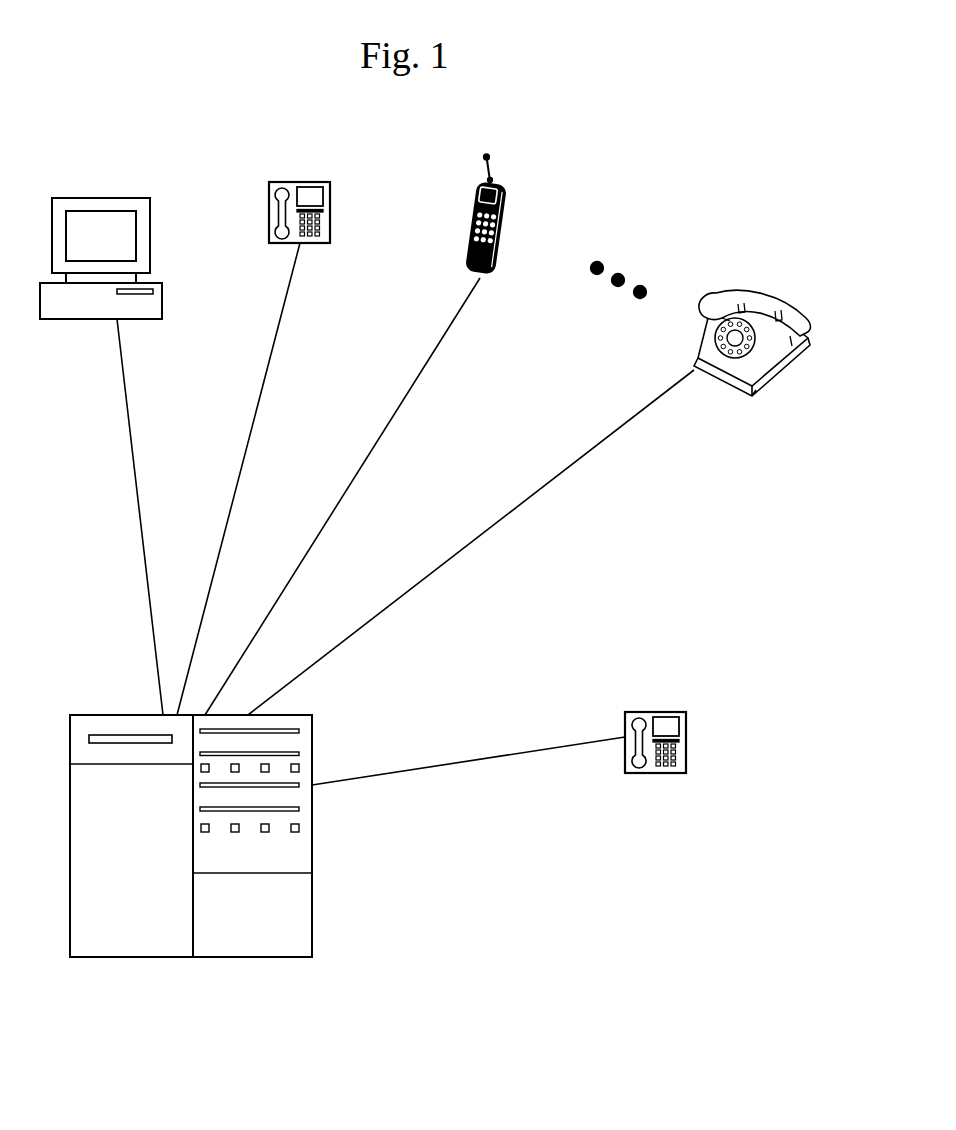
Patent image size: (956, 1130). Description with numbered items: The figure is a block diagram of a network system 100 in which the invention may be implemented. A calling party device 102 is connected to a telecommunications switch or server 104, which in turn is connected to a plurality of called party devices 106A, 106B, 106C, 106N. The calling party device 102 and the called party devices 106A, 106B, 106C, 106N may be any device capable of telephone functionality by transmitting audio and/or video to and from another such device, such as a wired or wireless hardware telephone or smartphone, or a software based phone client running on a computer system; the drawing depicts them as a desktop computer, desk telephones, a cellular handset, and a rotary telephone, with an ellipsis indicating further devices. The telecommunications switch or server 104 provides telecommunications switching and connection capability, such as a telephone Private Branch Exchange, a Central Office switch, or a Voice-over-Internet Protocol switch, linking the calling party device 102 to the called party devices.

The system 100 is at (503, 1067).
The calling party device 102 is at (643, 712).
The telecommunications switch or server 104 is at (313, 735).
The called party device 106A is at (85, 198).
The called party device 106B is at (290, 182).
The called party device 106C is at (505, 203).
The called party device 106N is at (763, 285).